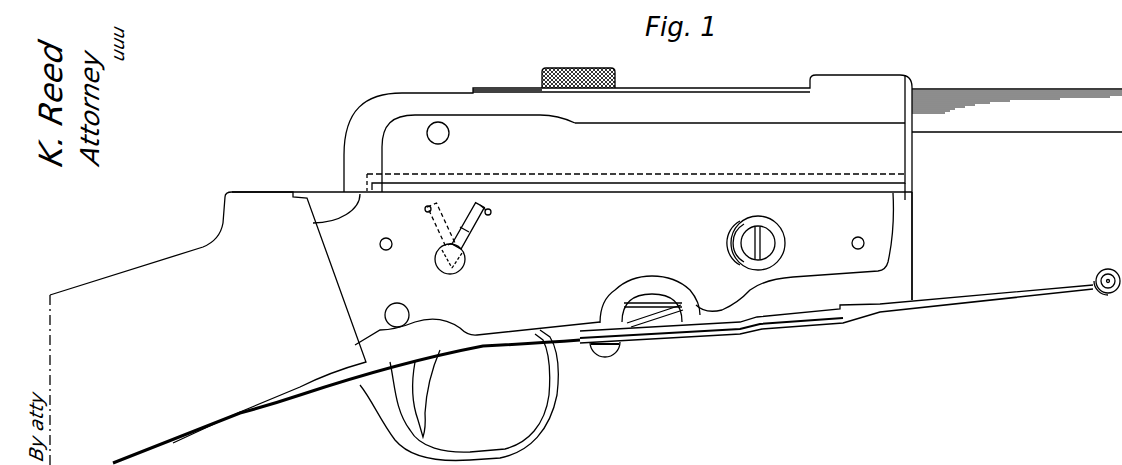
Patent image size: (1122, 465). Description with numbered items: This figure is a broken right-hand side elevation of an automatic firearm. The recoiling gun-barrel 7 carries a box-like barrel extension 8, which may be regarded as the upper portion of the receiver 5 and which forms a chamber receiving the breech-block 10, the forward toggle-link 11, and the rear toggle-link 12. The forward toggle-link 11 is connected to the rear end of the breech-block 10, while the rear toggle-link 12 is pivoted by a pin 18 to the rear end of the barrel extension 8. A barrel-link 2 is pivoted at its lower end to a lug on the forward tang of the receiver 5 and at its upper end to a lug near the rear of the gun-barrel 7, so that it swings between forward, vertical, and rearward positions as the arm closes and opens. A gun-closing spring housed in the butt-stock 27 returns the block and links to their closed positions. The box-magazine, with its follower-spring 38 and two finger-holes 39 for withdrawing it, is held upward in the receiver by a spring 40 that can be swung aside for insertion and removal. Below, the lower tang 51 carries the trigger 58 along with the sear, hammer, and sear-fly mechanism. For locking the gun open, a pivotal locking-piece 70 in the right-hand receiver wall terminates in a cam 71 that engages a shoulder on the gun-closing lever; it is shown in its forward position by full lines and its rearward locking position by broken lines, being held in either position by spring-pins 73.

The barrel-link 2 is at (1100, 290).
The receiver 5 is at (612, 264).
The recoiling gun-barrel 7 is at (1017, 110).
The barrel extension 8 is at (852, 82).
The breech-block 10 is at (740, 96).
The forward toggle-link 11 is at (650, 88).
The rear toggle-link 12 is at (507, 82).
The pin 18 is at (449, 133).
The butt-stock 27 is at (112, 287).
The follower-spring 38 is at (651, 296).
The finger-holes 39 is at (672, 296).
The spring 40 is at (660, 343).
The lower tang 51 is at (307, 397).
The trigger 58 is at (437, 388).
The locking-piece 70 is at (476, 228).
The cam 71 is at (462, 260).
The spring-pins 73 is at (424, 210).